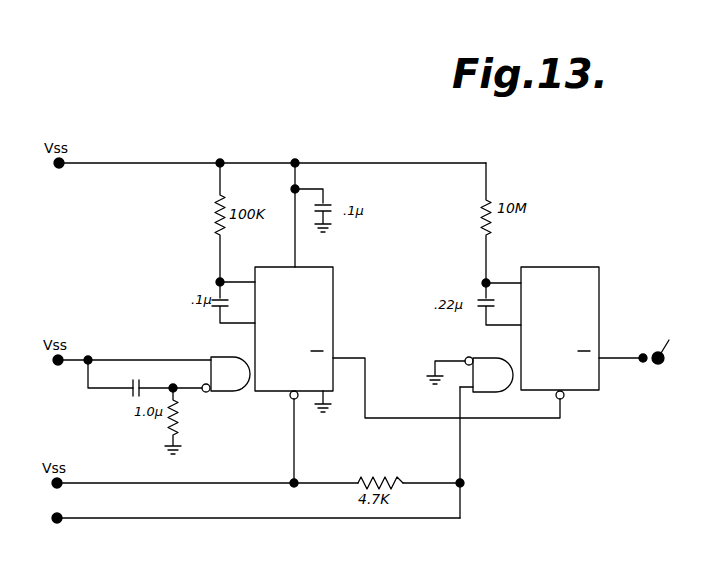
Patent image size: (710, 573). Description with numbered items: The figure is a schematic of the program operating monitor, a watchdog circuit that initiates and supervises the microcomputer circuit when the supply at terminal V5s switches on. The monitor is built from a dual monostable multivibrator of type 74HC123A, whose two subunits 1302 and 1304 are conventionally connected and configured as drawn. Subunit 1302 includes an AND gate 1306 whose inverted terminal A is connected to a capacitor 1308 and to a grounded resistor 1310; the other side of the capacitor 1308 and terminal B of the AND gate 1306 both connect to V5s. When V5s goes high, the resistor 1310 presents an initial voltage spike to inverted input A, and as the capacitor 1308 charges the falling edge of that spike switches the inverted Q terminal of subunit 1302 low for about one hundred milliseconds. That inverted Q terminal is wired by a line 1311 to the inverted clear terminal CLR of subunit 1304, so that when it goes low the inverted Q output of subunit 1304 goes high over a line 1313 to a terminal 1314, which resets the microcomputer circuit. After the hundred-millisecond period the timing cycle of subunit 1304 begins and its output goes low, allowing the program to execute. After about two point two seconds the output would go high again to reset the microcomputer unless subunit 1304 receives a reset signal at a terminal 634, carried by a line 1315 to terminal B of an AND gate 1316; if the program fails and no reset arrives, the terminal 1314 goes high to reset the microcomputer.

The subunit 1302 is at (333, 286).
The subunit 1304 is at (590, 267).
The AND gate 1306 is at (211, 357).
The capacitor 1308 is at (128, 393).
The grounded resistor 1310 is at (168, 428).
The line 1311 is at (489, 419).
The line 1313 is at (625, 362).
The terminal 1314 is at (669, 339).
The line 1315 is at (258, 520).
The AND gate 1316 is at (490, 358).
The terminal 634 is at (57, 522).